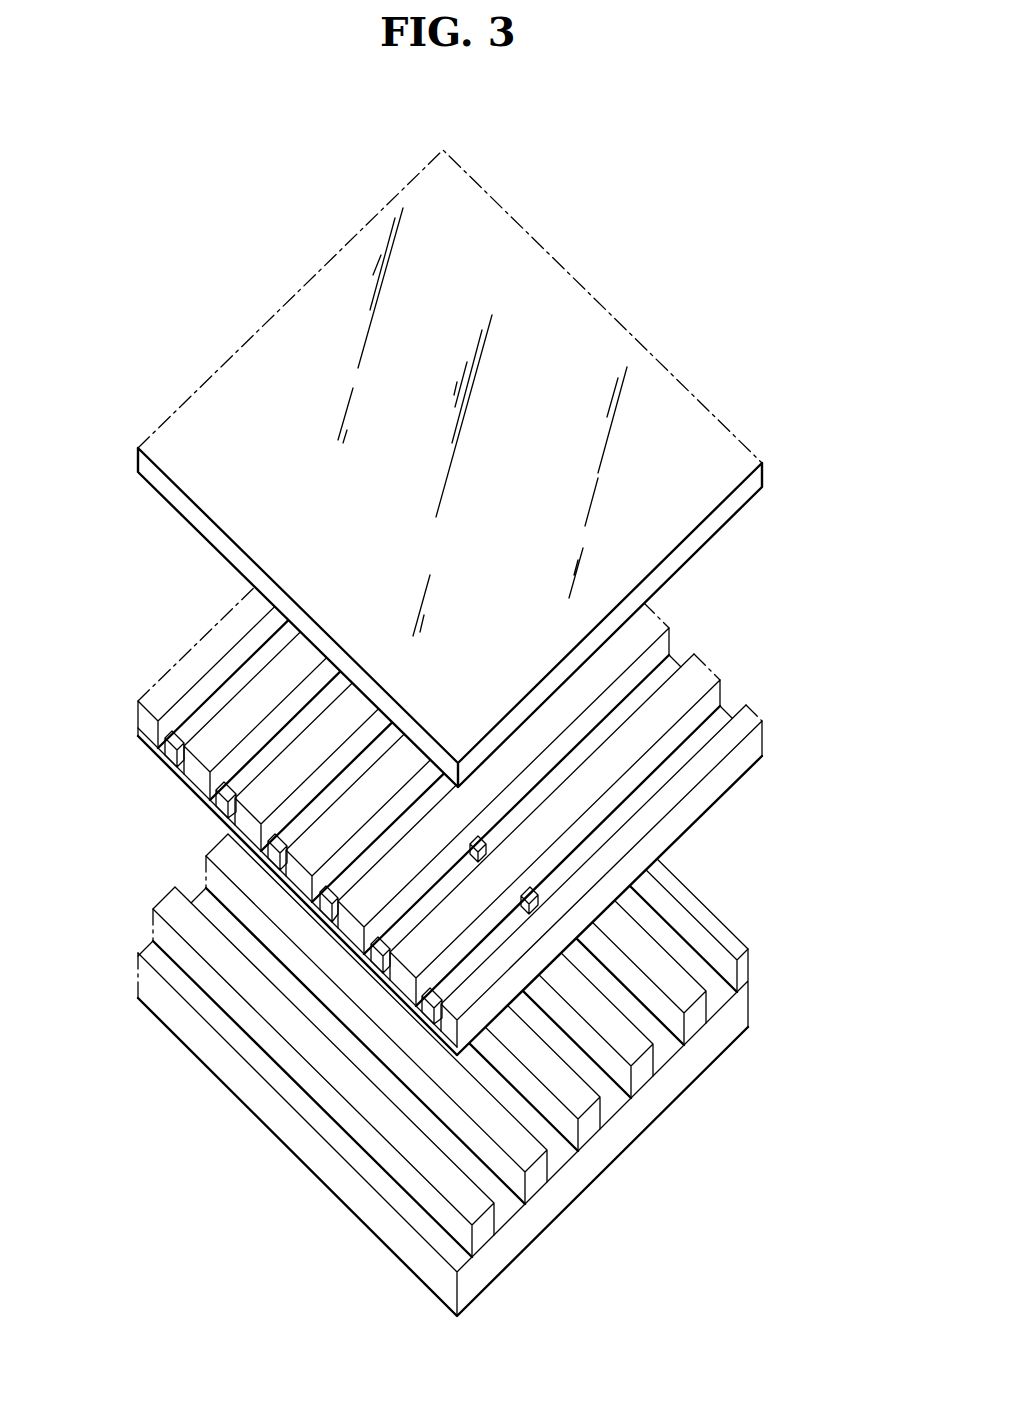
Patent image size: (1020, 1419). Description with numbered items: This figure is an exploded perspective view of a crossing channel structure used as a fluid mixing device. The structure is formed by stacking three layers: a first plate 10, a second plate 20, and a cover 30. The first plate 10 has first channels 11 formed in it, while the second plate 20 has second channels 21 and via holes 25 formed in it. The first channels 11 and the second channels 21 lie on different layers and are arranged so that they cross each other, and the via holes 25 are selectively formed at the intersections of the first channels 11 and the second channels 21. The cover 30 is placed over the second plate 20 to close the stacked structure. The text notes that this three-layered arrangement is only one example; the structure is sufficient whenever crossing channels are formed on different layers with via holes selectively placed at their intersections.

The first plate 10 is at (443, 977).
The first channels 11 is at (507, 1200).
The second plate 20 is at (422, 738).
The second channels 21 is at (210, 688).
The via holes 25 is at (164, 752).
The cover 30 is at (178, 509).